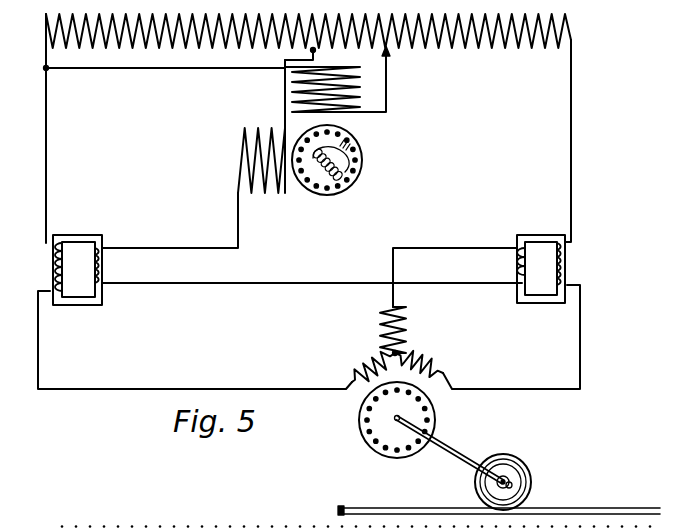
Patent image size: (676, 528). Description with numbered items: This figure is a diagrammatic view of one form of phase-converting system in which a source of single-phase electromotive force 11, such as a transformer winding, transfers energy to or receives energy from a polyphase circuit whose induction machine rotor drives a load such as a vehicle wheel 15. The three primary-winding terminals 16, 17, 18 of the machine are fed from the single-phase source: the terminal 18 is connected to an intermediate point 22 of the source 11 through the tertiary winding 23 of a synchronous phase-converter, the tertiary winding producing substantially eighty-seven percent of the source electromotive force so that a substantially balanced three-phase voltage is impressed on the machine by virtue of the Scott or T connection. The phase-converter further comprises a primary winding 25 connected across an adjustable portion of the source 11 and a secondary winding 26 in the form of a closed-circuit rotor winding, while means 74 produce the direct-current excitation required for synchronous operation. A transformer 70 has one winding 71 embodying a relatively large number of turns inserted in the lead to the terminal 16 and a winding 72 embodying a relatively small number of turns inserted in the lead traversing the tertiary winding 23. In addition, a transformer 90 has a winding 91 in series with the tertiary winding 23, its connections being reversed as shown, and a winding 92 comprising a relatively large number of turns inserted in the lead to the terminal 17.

The source of single-phase electromotive force 11 is at (265, 21).
The vehicle wheel 15 is at (512, 474).
The terminal 16 is at (363, 381).
The terminal 17 is at (437, 369).
The terminal 18 is at (400, 321).
The intermediate point 22 is at (285, 90).
The tertiary winding 23 is at (258, 194).
The primary winding 25 is at (357, 94).
The secondary winding 26 is at (362, 152).
The transformer 70 is at (86, 283).
The winding 71 is at (49, 262).
The winding 72 is at (103, 265).
The means for producing direct-current excitation 74 is at (332, 172).
The transformer 90 is at (541, 269).
The winding 91 is at (517, 260).
The winding 92 is at (571, 256).